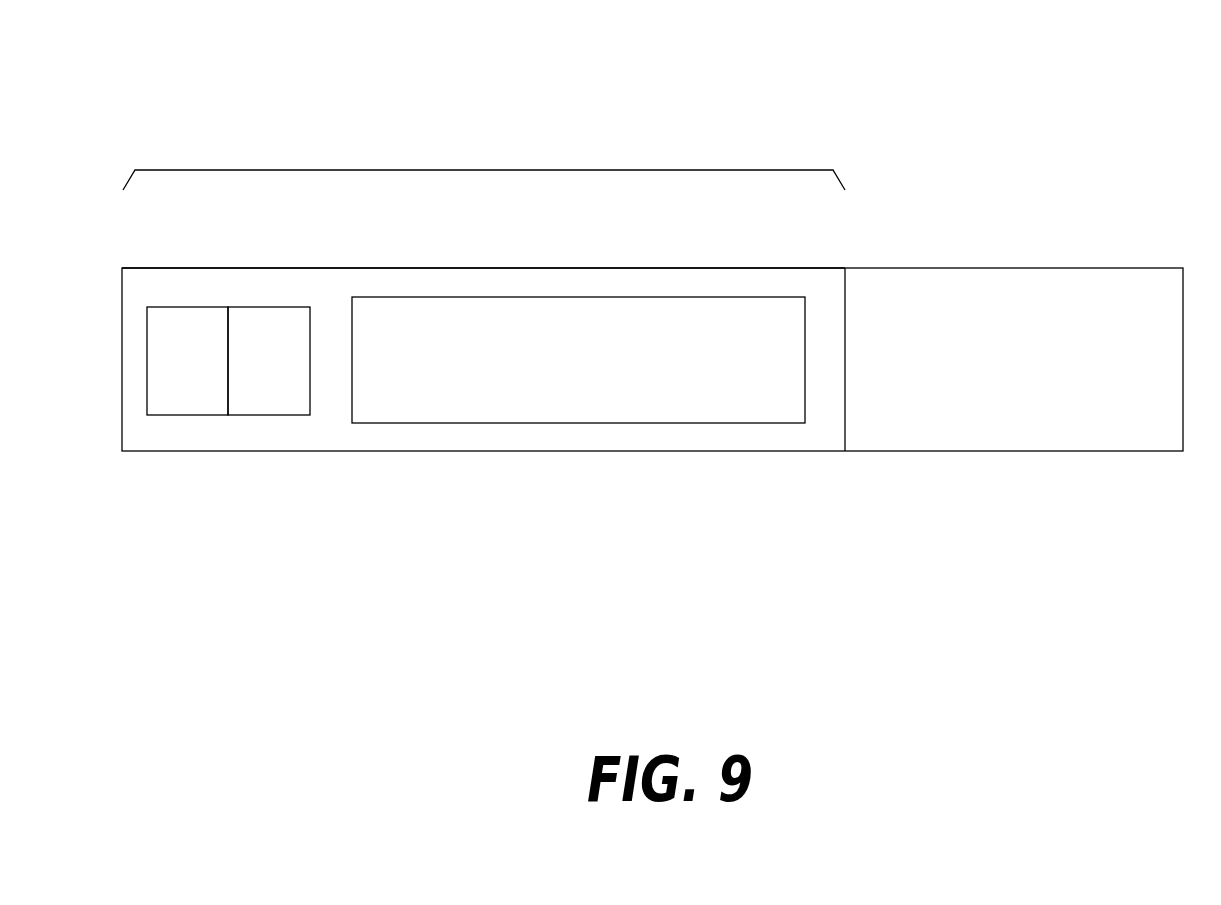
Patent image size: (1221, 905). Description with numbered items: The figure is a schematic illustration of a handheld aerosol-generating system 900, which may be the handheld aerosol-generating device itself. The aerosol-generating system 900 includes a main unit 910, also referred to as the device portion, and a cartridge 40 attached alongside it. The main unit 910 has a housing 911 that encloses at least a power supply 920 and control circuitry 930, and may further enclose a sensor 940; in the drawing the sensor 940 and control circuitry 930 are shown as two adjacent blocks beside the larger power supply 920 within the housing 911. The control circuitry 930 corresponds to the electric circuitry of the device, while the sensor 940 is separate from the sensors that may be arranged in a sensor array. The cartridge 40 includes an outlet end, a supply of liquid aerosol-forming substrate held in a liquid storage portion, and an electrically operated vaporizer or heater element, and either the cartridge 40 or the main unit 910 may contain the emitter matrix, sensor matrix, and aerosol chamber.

The aerosol-generating system 900 is at (750, 138).
The main unit 910 is at (500, 167).
The housing 911 is at (383, 268).
The power supply 920 is at (618, 415).
The control circuitry 930 is at (280, 405).
The sensor 940 is at (176, 398).
The cartridge 40 is at (1012, 268).